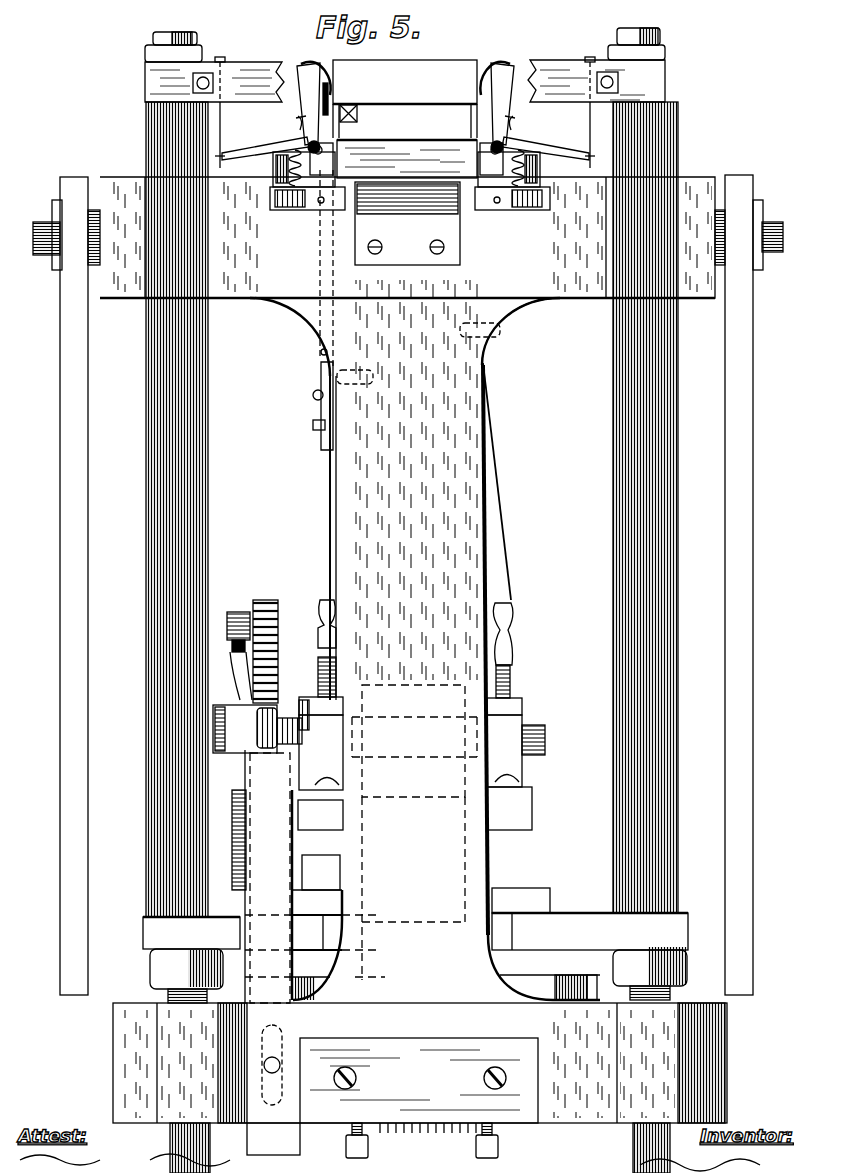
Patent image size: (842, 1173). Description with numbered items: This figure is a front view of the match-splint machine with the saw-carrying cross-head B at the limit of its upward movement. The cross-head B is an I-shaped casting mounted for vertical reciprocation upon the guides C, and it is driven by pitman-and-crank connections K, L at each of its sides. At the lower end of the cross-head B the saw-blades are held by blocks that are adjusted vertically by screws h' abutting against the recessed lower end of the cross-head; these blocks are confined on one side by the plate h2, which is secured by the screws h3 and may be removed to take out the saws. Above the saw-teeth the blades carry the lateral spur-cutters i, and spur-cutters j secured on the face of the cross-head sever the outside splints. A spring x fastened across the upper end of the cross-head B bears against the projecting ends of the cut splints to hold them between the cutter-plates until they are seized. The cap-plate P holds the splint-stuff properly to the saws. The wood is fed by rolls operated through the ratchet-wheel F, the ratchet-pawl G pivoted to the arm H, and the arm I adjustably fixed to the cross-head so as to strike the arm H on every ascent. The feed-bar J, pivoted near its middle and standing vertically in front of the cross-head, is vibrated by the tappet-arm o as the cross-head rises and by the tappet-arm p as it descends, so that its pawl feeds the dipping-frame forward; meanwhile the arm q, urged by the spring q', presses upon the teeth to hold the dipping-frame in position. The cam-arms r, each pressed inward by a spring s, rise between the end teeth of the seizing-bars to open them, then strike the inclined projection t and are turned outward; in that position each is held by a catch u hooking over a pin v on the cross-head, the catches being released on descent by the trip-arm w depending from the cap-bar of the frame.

The clamp bars A is at (415, 945).
The cross-head B is at (413, 666).
The guides C is at (416, 637).
The ratchet-wheel F is at (252, 647).
The ratchet-pawl G is at (233, 656).
The arm H is at (257, 729).
The arm I is at (268, 878).
The feed-bar J is at (317, 435).
The pitman-and-crank connection K is at (739, 585).
The pitman-and-crank connection L is at (74, 586).
The cap-plate P is at (230, 840).
The lateral spur-cutters i is at (272, 1065).
The spur-cutters j is at (324, 362).
The tappet-arm o is at (322, 595).
The tappet-arm p is at (321, 383).
The arm q is at (400, 149).
The spring q' is at (343, 100).
The cam-arms r is at (405, 108).
The spring s is at (406, 168).
The inclined or curved projection t is at (405, 72).
The catch u is at (405, 144).
The pin v is at (406, 176).
The trip-arm w is at (405, 112).
The spring x is at (407, 223).
The screws h' is at (431, 1140).
The plate h2 is at (419, 1080).
The screws h3 is at (427, 1069).